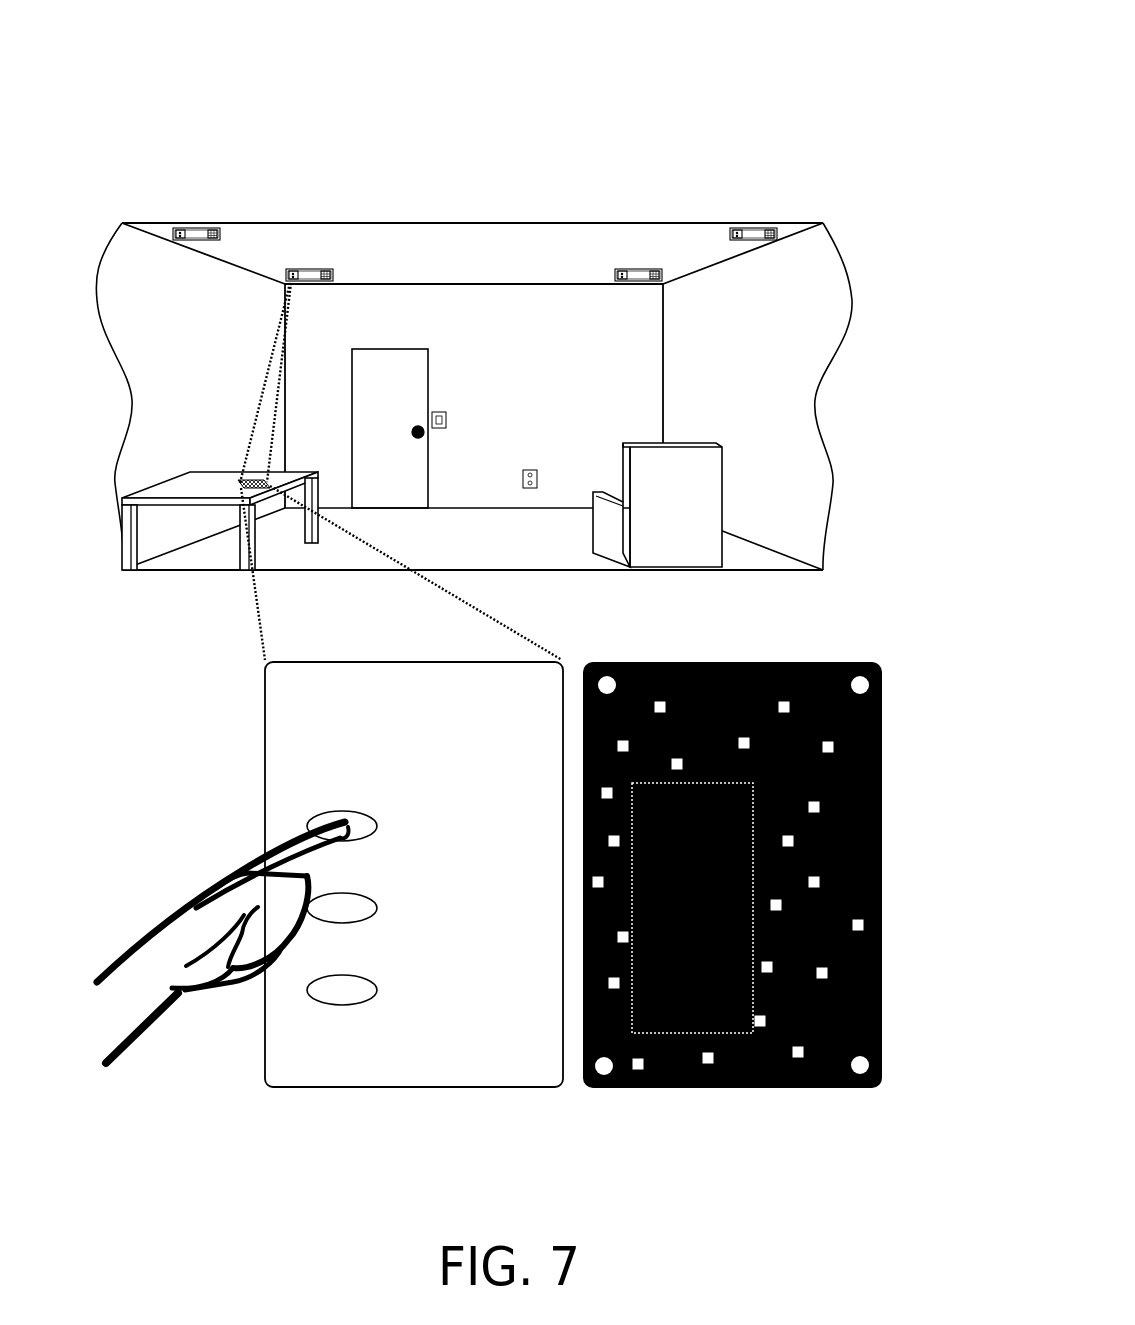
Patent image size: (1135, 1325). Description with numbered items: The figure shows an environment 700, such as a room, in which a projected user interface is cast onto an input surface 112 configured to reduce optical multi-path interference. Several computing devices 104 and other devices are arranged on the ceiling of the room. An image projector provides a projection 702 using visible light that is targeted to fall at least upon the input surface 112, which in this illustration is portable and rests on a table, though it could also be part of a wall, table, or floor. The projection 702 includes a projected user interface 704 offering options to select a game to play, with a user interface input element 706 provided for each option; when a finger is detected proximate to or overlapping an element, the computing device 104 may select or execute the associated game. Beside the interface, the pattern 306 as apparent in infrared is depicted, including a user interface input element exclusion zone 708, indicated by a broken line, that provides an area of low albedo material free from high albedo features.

The environment 700 is at (773, 48).
The projection 702 is at (272, 357).
The computing device 104 is at (613, 262).
The projected user interface 704 is at (288, 712).
The user interface input element 706 is at (317, 813).
The pattern 306 is at (748, 678).
The input surface 112 is at (348, 1058).
The user interface input element exclusion zone 708 is at (693, 1033).